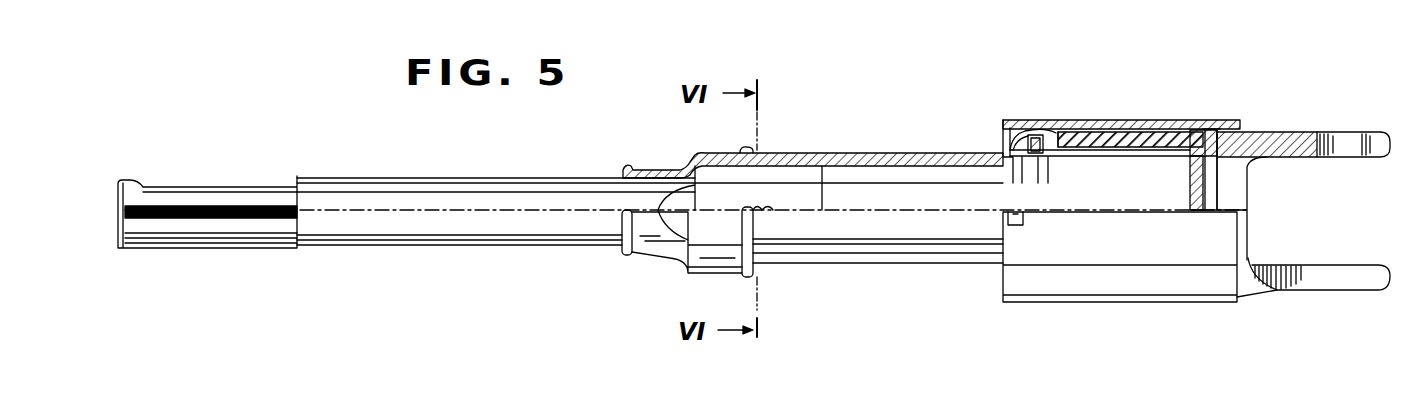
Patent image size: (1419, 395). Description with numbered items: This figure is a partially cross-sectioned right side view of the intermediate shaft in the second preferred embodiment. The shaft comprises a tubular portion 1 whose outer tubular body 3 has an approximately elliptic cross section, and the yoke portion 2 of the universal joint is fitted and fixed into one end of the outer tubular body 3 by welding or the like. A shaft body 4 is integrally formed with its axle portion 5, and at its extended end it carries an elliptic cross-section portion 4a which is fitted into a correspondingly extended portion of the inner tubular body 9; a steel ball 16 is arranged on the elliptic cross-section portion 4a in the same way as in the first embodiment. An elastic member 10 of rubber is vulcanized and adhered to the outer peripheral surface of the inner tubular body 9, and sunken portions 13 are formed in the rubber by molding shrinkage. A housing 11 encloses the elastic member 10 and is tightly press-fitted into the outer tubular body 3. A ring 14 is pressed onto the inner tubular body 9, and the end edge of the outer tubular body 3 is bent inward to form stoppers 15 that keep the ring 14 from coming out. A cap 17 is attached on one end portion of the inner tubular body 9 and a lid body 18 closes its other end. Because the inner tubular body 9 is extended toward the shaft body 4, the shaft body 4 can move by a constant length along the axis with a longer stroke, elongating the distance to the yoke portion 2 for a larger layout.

The tubular portion 1 is at (1167, 120).
The yoke portion 2 is at (1304, 150).
The outer tubular body 3 is at (1133, 121).
The shaft body 4 is at (581, 178).
The elliptic cross-section portion 4a is at (812, 202).
The axle portion 5 is at (287, 232).
The inner tubular body 9 is at (908, 155).
The elastic member 10 is at (1198, 122).
The housing 11 is at (1081, 130).
The sunken portions 13 is at (1058, 120).
The ring 14 is at (1046, 148).
The stopper 15 is at (1016, 214).
The steel ball 16 is at (762, 208).
The cap 17 is at (746, 148).
The lid body 18 is at (1191, 198).